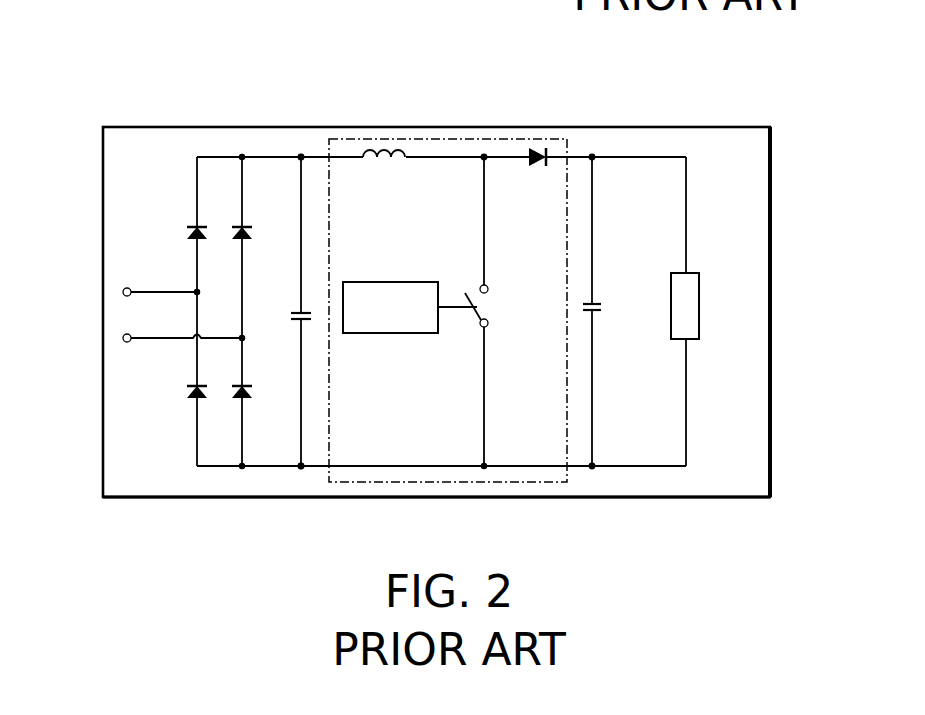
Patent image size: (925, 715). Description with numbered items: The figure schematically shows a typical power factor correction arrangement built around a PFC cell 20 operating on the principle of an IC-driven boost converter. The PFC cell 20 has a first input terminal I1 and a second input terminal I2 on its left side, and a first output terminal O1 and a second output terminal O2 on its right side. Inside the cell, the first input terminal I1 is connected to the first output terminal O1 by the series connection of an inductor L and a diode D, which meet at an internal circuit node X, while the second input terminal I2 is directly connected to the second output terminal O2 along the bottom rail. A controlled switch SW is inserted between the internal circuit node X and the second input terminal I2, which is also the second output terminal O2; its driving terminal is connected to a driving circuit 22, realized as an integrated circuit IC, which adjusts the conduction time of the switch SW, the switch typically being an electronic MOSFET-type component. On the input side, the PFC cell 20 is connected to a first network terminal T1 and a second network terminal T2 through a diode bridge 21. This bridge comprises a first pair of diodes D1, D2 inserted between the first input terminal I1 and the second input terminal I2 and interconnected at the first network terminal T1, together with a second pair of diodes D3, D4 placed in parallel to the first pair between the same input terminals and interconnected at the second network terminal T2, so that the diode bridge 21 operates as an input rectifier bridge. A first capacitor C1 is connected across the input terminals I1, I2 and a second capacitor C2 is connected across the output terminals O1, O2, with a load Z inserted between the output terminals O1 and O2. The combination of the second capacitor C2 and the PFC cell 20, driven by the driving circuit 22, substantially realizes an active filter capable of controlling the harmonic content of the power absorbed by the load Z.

The PFC cell 20 is at (441, 110).
The diode bridge 21 is at (221, 172).
The driving circuit 22 is at (410, 350).
The integrated circuit driving circuit IC is at (400, 328).
The first network terminal T1 is at (124, 292).
The second network terminal T2 is at (123, 338).
The diode of first pair D1 is at (164, 226).
The diode of first pair D2 is at (173, 407).
The diode of second pair D3 is at (261, 226).
The diode of second pair D4 is at (261, 407).
The first capacitor C1 is at (278, 308).
The first input terminal I1 is at (298, 157).
The second input terminal I2 is at (300, 466).
The inductor L is at (384, 172).
The internal circuit node X is at (487, 157).
The controlled switch SW is at (507, 313).
The diode D is at (534, 176).
The first output terminal O1 is at (595, 157).
The second output terminal O2 is at (593, 466).
The second capacitor C2 is at (611, 311).
The load Z is at (706, 311).